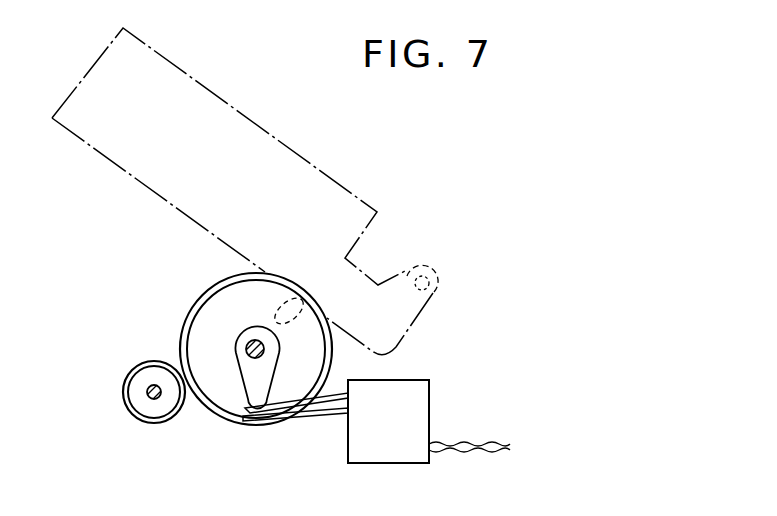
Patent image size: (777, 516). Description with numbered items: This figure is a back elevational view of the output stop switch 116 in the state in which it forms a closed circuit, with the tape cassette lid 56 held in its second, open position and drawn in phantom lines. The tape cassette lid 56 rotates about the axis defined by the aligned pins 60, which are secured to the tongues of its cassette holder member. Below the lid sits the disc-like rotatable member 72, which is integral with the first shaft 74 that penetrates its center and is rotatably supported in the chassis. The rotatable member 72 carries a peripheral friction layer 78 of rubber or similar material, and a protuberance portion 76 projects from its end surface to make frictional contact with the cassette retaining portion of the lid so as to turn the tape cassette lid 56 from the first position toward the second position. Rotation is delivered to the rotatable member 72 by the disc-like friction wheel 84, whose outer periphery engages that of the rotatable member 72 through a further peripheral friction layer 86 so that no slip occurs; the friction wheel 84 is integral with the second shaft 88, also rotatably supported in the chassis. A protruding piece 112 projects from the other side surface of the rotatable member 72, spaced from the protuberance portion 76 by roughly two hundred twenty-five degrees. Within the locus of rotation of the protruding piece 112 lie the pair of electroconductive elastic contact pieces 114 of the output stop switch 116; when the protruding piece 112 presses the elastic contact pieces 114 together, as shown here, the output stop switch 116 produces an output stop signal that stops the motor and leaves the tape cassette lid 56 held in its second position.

The tape cassette lid 56 is at (240, 128).
The pin 60 is at (435, 282).
The rotatable member 72 is at (180, 323).
The peripheral friction layer 78 is at (201, 301).
The protuberance portion 76 is at (280, 304).
The first shaft 74 is at (245, 350).
The protruding piece 112 is at (270, 350).
The elastic contact pieces 114 is at (337, 394).
The output stop switch 116 is at (403, 452).
The friction wheel 84 is at (163, 432).
The peripheral friction layer 86 is at (180, 420).
The second shaft 88 is at (153, 400).